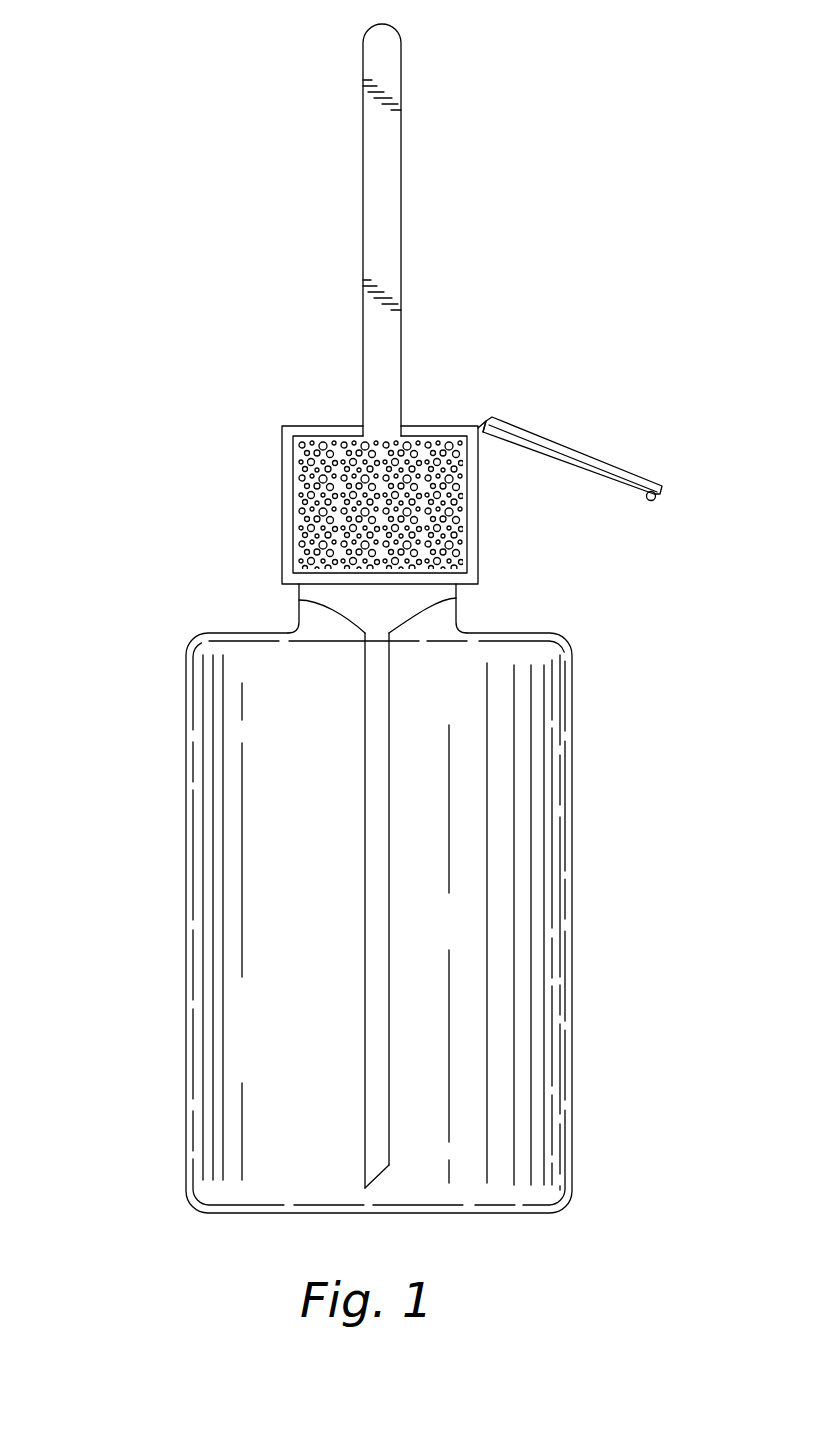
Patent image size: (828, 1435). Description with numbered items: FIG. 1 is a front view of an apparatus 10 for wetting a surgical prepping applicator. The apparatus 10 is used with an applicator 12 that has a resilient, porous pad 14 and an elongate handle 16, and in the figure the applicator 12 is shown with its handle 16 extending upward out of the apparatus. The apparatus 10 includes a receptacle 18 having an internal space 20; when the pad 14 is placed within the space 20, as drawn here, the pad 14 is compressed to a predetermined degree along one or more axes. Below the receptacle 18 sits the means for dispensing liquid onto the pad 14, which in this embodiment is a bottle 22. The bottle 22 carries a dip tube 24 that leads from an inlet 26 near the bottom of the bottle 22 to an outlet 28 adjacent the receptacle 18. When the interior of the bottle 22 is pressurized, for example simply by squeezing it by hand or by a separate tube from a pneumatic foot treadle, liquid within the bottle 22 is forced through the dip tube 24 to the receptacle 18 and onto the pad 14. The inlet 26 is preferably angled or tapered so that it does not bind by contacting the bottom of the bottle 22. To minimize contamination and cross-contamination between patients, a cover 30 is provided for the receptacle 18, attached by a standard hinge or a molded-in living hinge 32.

The apparatus 10 is at (199, 228).
The applicator 12 is at (355, 225).
The resilient, porous pad 14 is at (298, 485).
The elongate handle 16 is at (390, 150).
The receptacle 18 is at (282, 545).
The internal space 20 is at (298, 472).
The bottle 22 is at (568, 868).
The dip tube 24 is at (364, 905).
The inlet 26 is at (373, 1177).
The outlet 28 is at (340, 617).
The cover 30 is at (583, 468).
The living hinge 32 is at (480, 426).